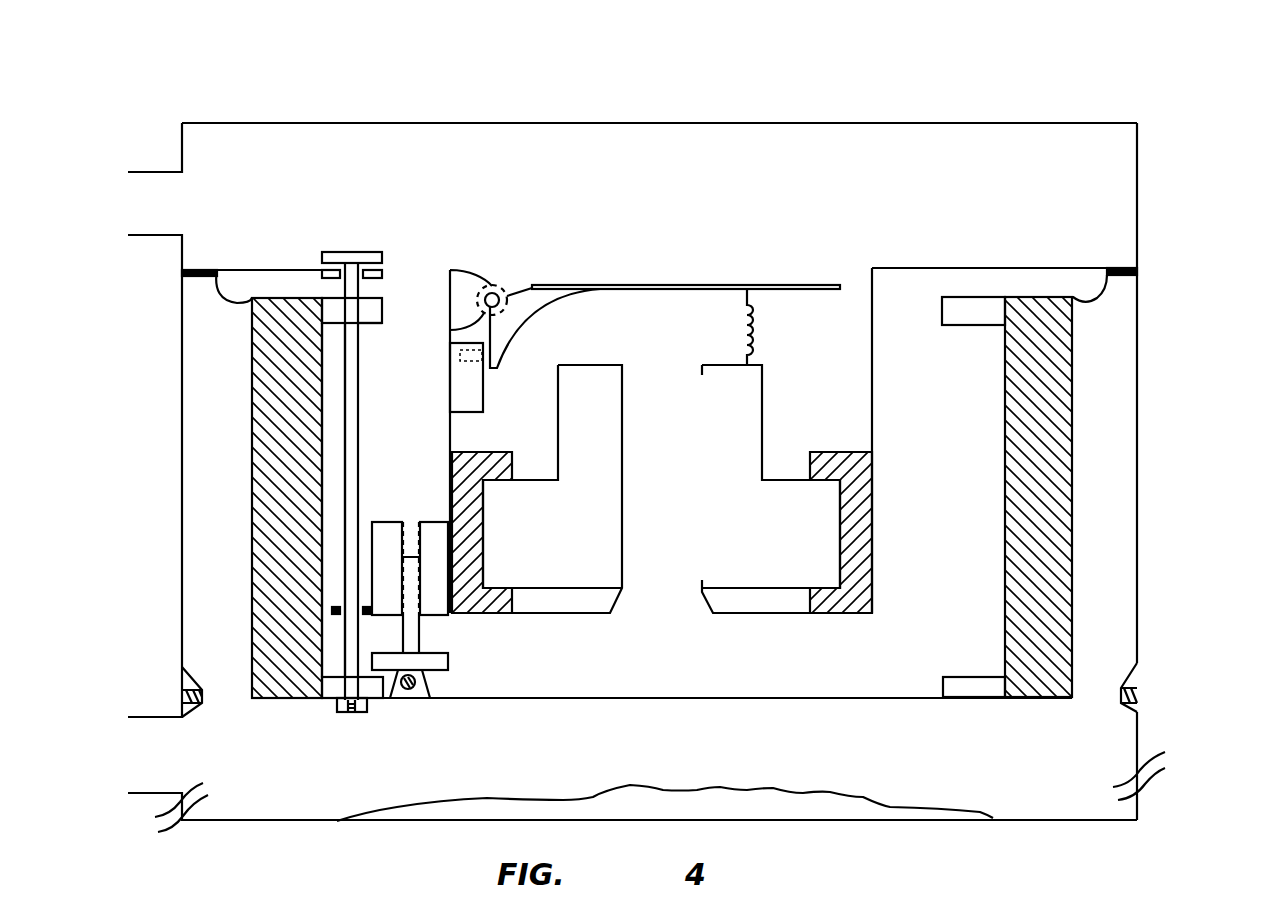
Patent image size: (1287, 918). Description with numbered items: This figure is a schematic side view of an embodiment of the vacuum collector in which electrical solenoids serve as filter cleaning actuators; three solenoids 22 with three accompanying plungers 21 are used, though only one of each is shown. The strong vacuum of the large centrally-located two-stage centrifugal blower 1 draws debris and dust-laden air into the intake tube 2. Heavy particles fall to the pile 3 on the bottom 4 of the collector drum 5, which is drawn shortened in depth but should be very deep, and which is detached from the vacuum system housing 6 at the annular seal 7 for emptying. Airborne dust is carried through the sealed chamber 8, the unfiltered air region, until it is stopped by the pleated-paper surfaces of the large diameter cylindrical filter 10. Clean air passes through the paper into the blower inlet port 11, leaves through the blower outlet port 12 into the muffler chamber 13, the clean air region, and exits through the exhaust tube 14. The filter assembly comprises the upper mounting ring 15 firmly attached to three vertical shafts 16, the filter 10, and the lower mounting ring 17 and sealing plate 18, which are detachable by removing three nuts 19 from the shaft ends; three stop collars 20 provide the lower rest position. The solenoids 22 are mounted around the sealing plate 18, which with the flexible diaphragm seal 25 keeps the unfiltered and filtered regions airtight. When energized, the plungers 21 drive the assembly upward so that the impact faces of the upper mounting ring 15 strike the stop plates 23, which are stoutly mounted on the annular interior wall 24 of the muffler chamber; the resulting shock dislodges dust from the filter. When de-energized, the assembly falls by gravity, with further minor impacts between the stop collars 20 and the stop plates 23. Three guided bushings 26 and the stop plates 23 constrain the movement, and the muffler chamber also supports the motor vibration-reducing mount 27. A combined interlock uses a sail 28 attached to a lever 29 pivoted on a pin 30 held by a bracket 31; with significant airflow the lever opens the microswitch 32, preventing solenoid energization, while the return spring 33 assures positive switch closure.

The two-stage centrifugal blower 1 is at (765, 430).
The intake tube 2 is at (150, 717).
The pile 3 is at (868, 790).
The bottom 4 is at (292, 822).
The collector drum 5 is at (1140, 740).
The vacuum system housing 6 is at (1140, 565).
The annular seal 7 is at (1143, 677).
The sealed chamber 8 is at (213, 460).
The cylindrical filter 10 is at (1005, 490).
The blower inlet port 11 is at (622, 585).
The blower outlet port 12 is at (622, 367).
The muffler chamber 13 is at (832, 182).
The exhaust tube 14 is at (165, 165).
The upper mounting ring 15 is at (368, 325).
The vertical shafts 16 is at (358, 442).
The lower mounting ring 17 is at (985, 677).
The sealing plate 18 is at (840, 688).
The nuts 19 is at (367, 712).
The stop collars 20 is at (365, 250).
The plungers 21 is at (448, 662).
The solenoids 22 is at (391, 520).
The stop plates 23 is at (383, 271).
The annular interior wall 24 is at (265, 270).
The flexible diaphragm seal 25 is at (1097, 302).
The guided bushings 26 is at (368, 614).
The motor vibration-reducing mount 27 is at (848, 448).
The sail 28 is at (708, 283).
The lever 29 is at (556, 315).
The pin 30 is at (500, 290).
The bracket 31 is at (468, 270).
The microswitch 32 is at (483, 390).
The return spring 33 is at (752, 330).